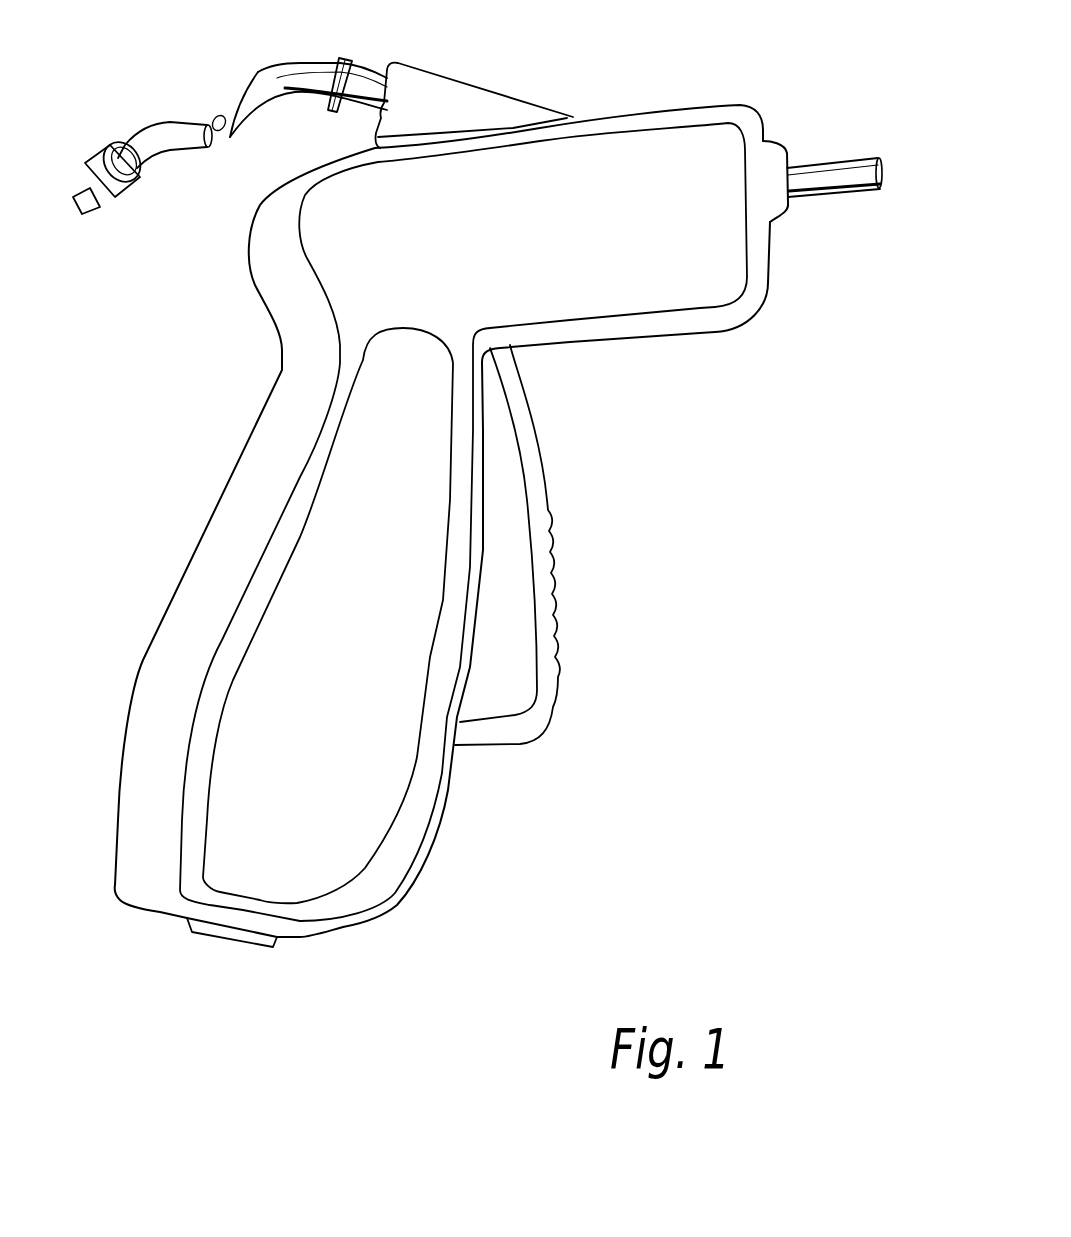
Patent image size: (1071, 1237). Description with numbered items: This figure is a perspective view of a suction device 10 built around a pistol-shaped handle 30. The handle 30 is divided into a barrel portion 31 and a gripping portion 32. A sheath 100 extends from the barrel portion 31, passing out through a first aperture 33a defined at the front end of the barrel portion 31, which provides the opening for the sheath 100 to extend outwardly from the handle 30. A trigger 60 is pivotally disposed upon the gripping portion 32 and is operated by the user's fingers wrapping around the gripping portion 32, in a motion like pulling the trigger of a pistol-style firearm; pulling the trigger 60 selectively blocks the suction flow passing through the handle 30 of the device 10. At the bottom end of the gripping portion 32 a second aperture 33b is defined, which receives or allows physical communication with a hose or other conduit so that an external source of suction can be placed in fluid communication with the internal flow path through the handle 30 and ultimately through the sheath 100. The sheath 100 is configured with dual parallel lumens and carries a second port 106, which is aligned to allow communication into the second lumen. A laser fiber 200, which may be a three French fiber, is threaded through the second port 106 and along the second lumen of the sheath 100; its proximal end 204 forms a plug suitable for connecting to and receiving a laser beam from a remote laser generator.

The suction device 10 is at (180, 471).
The handle 30 is at (147, 660).
The barrel portion 31 is at (630, 296).
The gripping portion 32 is at (385, 815).
The first aperture 33a is at (795, 210).
The second aperture 33b is at (200, 937).
The trigger 60 is at (557, 666).
The sheath 100 is at (836, 165).
The second port 106 is at (333, 110).
The laser fiber 200 is at (258, 68).
The proximal end 204 is at (128, 190).